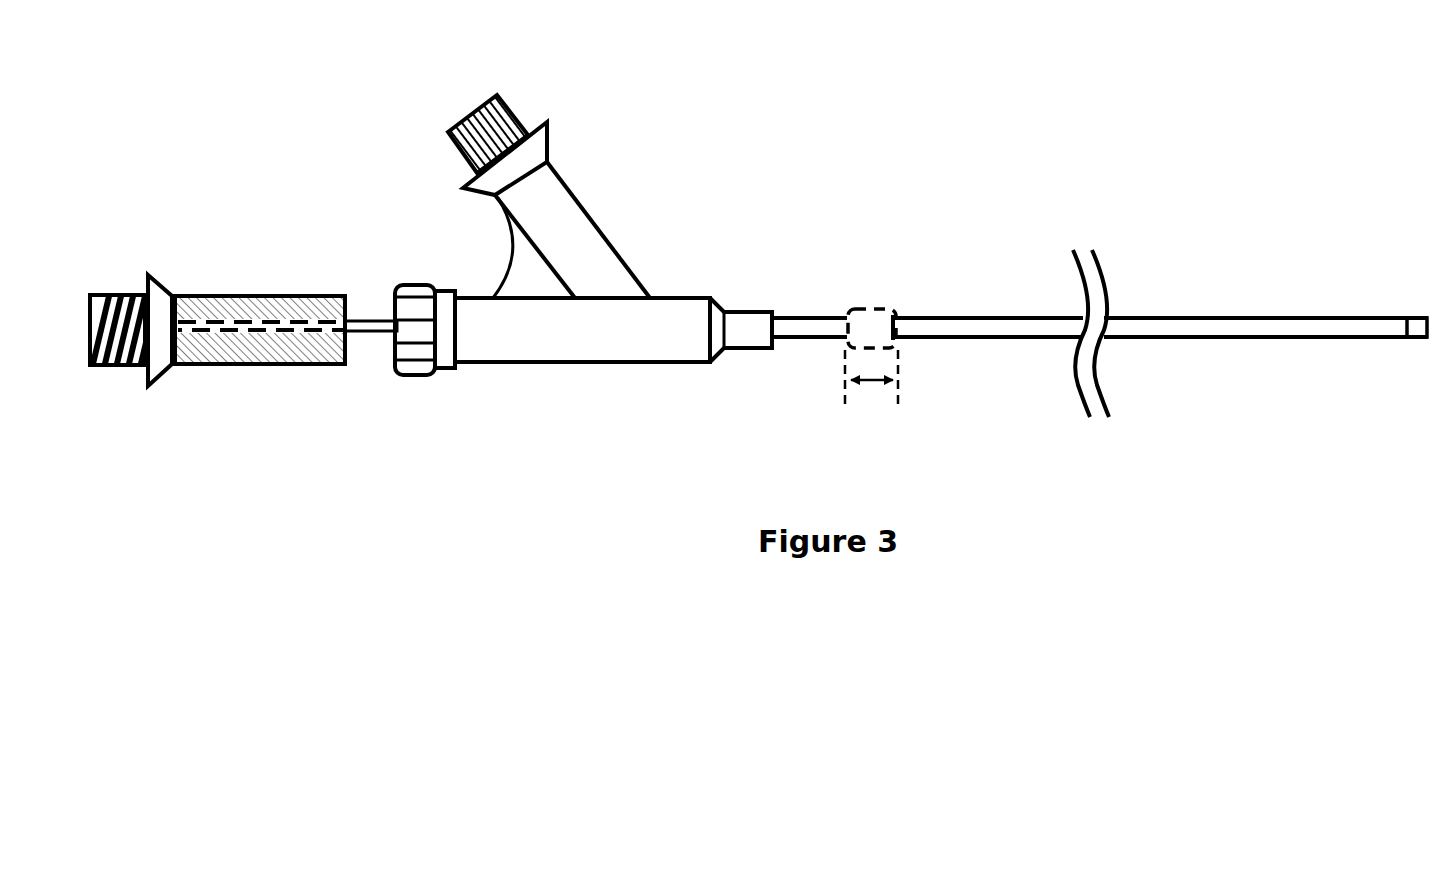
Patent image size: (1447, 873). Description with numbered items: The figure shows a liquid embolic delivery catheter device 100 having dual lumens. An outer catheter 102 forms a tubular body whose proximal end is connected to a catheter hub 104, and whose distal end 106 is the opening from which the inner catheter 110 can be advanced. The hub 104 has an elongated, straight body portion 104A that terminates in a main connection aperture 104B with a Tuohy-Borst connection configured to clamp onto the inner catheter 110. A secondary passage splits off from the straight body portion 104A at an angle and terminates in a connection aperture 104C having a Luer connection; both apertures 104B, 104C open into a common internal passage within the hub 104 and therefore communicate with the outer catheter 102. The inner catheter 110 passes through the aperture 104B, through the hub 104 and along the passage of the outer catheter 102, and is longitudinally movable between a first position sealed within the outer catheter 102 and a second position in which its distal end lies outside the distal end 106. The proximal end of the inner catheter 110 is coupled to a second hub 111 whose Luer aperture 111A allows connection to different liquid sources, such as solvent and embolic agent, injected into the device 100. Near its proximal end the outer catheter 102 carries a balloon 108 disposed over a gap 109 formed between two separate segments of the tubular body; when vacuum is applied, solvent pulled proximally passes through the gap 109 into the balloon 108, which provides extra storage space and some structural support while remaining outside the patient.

The device 100 is at (1115, 489).
The outer catheter 102 is at (1165, 305).
The catheter hub 104 is at (676, 226).
The straight body portion 104A is at (602, 345).
The main connection aperture 104B is at (395, 314).
The connection aperture 104C is at (512, 113).
The distal end 106 is at (1407, 317).
The balloon 108 is at (877, 307).
The gap 109 is at (882, 386).
The inner catheter 110 is at (372, 334).
The second hub 111 is at (270, 365).
The aperture 111A is at (115, 362).